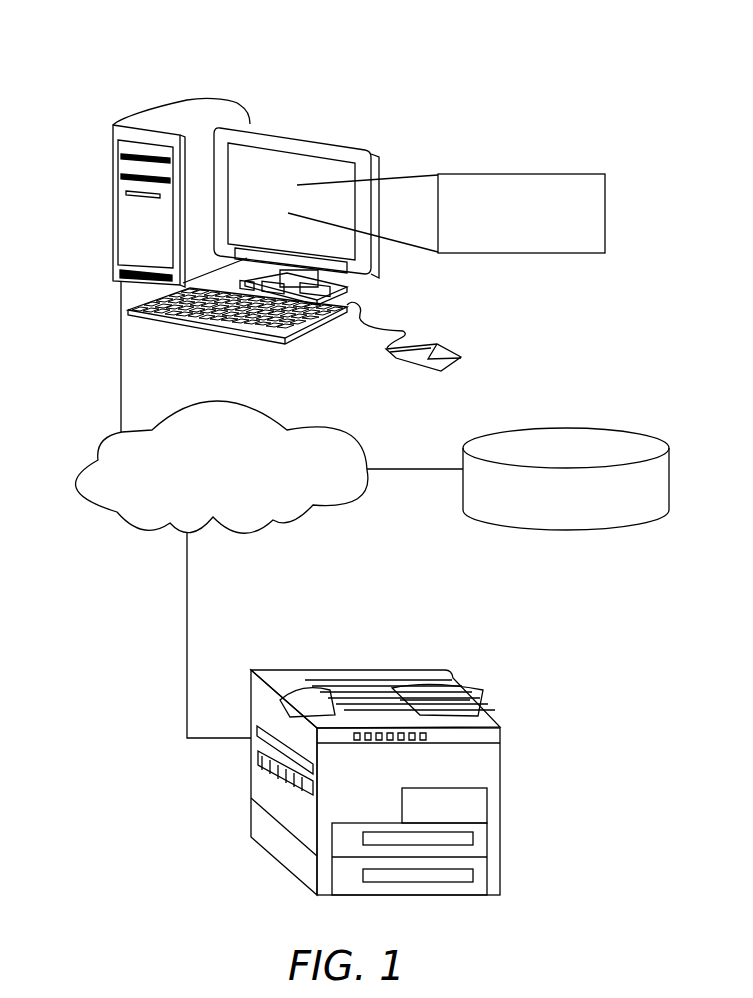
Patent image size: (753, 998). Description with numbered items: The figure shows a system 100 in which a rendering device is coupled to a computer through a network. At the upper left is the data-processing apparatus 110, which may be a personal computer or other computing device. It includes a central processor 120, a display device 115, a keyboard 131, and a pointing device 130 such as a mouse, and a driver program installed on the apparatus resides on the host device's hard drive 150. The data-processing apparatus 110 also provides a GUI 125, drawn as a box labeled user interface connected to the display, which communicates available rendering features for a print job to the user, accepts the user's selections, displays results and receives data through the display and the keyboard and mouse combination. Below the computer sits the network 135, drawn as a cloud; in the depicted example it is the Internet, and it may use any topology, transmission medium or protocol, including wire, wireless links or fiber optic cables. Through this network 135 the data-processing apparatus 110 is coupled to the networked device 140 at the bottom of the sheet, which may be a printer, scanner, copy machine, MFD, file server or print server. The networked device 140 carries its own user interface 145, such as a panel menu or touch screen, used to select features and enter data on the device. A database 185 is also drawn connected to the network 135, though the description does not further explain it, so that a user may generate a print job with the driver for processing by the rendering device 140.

The system 100 is at (470, 73).
The data-processing apparatus 110 is at (318, 168).
The display device 115 is at (300, 133).
The central processor 120 is at (112, 277).
The GUI 125 is at (548, 173).
The pointing device 130 is at (438, 344).
The keyboard 131 is at (202, 325).
The network 135 is at (247, 410).
The networked device 140 is at (393, 669).
The user interface 145 is at (437, 697).
The hard drive 150 is at (150, 112).
The database 185 is at (610, 428).